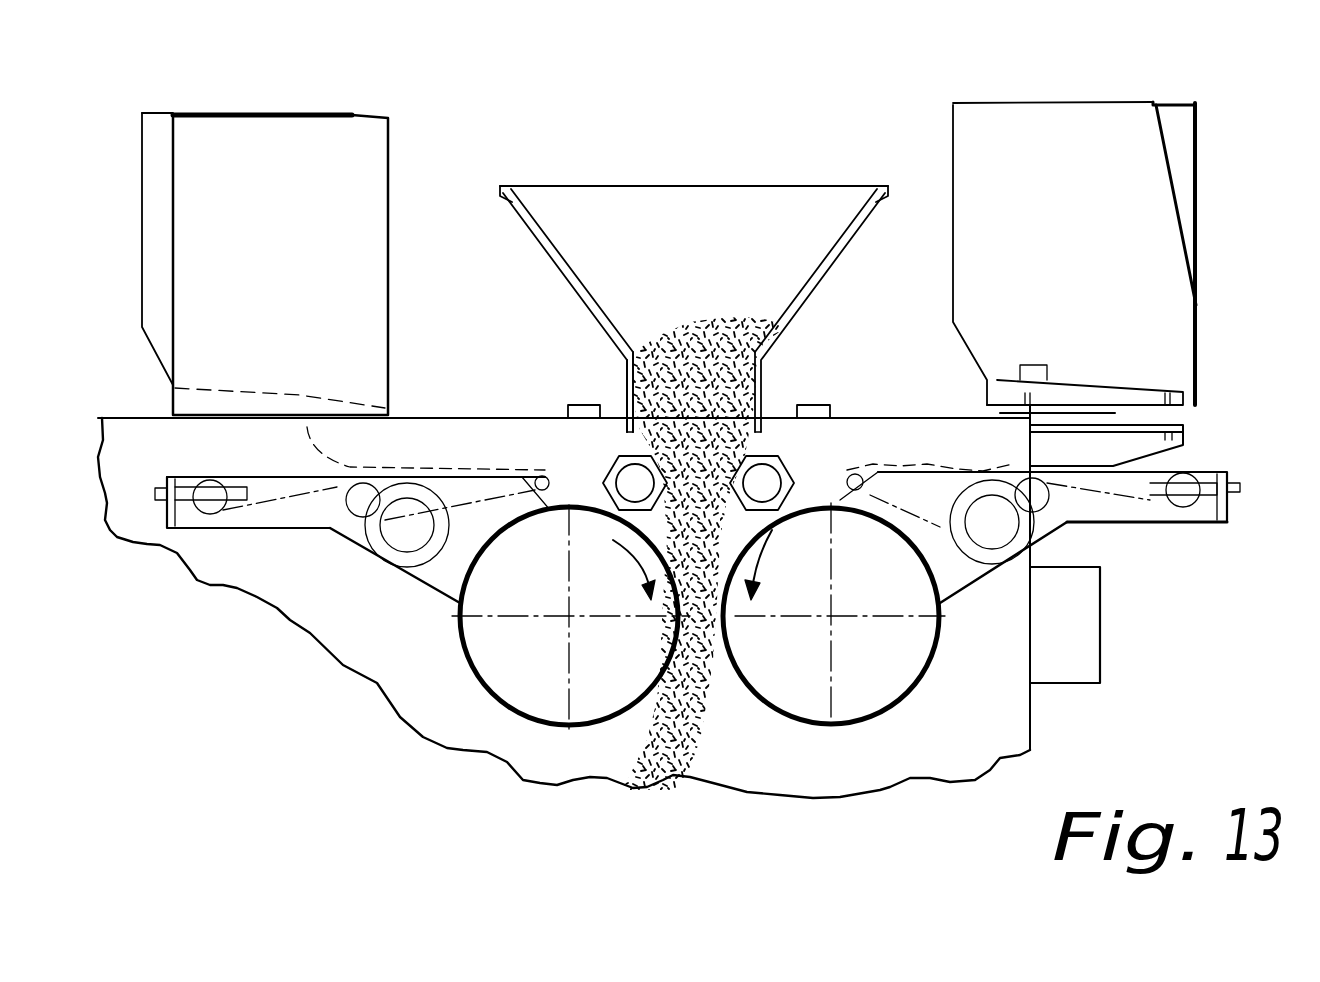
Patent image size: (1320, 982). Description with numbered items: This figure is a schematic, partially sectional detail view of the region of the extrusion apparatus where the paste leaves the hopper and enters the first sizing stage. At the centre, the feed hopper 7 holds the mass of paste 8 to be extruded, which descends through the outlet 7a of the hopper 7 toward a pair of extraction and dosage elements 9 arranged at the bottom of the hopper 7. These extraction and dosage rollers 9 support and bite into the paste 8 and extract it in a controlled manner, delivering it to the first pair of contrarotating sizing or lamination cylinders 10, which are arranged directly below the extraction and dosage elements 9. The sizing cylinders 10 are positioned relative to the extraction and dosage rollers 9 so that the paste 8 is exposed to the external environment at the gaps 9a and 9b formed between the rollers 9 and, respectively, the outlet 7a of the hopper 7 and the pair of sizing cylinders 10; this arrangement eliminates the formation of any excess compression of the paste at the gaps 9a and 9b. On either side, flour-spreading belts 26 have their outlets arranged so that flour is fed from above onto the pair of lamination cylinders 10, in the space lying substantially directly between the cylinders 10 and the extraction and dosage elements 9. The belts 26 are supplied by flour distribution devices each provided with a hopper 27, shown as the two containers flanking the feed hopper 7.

The feed hopper 7 is at (542, 247).
The outlet of the hopper 7a is at (627, 390).
The paste 8 is at (715, 348).
The extraction and dosage elements 9 is at (634, 500).
The gap 9a is at (620, 443).
The gap 9b is at (620, 517).
The lamination cylinders 10 is at (492, 678).
The flour-spreading belts 26 is at (478, 470).
The hopper 27 is at (358, 132).